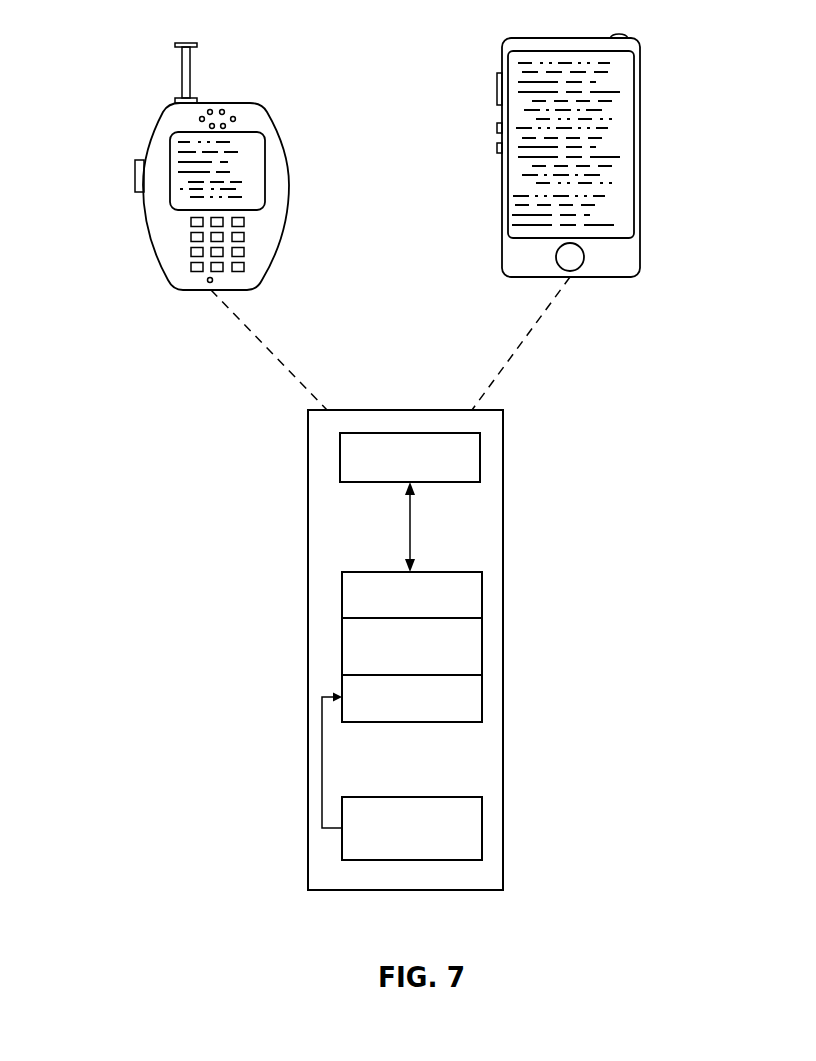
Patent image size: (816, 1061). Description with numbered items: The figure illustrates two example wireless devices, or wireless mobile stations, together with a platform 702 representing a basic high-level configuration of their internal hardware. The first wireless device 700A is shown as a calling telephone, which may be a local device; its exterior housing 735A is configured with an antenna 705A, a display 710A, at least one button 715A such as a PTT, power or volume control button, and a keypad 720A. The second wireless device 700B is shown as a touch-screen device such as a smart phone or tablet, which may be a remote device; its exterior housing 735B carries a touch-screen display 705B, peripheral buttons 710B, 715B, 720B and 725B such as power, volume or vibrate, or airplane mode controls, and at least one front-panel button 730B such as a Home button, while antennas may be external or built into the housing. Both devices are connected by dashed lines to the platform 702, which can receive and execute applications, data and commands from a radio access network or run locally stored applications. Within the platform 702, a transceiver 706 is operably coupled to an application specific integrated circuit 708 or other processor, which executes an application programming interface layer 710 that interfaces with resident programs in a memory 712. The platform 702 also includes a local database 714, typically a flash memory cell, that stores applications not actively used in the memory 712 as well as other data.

The wireless device 700A is at (215, 185).
The antenna 705A is at (187, 55).
The display 710A is at (265, 158).
The button 715A is at (144, 168).
The keypad 720A is at (245, 237).
The exterior housing 735A is at (163, 240).
The wireless device 700B is at (563, 154).
The touch-screen display 705B is at (633, 50).
The peripheral button 710B is at (625, 38).
The peripheral button 715B is at (498, 81).
The peripheral button 720B is at (498, 128).
The peripheral button 725B is at (498, 148).
The front-panel button 730B is at (558, 263).
The exterior housing 735B is at (640, 260).
The platform 702 is at (402, 650).
The transceiver 706 is at (480, 457).
The application specific integrated circuit (ASIC) 708 is at (482, 598).
The application programming interface (API) layer 710 is at (482, 648).
The memory 712 is at (482, 698).
The local database 714 is at (482, 815).